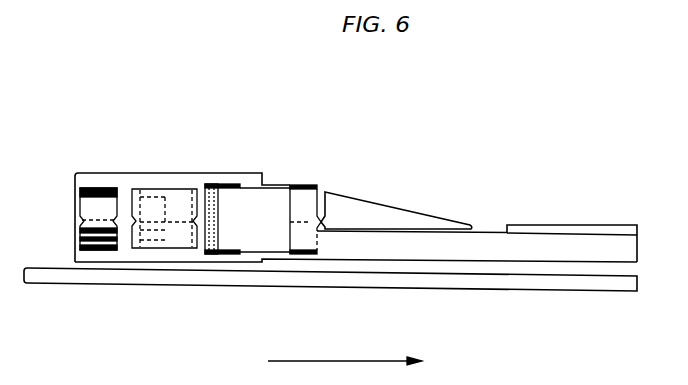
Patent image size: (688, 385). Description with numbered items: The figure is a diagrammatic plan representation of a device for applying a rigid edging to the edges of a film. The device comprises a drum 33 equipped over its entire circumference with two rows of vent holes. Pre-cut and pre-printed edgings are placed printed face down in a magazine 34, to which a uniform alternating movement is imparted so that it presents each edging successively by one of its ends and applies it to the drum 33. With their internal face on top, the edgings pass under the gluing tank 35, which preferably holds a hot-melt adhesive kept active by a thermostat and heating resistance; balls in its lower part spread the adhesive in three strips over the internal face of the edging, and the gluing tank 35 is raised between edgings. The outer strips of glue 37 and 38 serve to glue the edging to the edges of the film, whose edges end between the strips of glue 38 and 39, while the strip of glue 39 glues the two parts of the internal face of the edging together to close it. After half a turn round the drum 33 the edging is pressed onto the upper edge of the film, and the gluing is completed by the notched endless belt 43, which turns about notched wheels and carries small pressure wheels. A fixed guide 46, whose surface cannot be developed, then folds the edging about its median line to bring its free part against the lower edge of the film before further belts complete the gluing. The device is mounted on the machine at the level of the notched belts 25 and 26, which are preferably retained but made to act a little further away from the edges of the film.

The drum 33 is at (108, 173).
The magazine 34 is at (306, 184).
The gluing tank 35 is at (168, 269).
The outer strip of glue 37 is at (78, 193).
The outer strip of glue 38 is at (78, 245).
The strip of glue 39 is at (78, 232).
The notched endless belt 43 is at (485, 250).
The fixed guide 46 is at (414, 205).
The notched belt 25 is at (415, 288).
The notched belt 26 is at (330, 296).